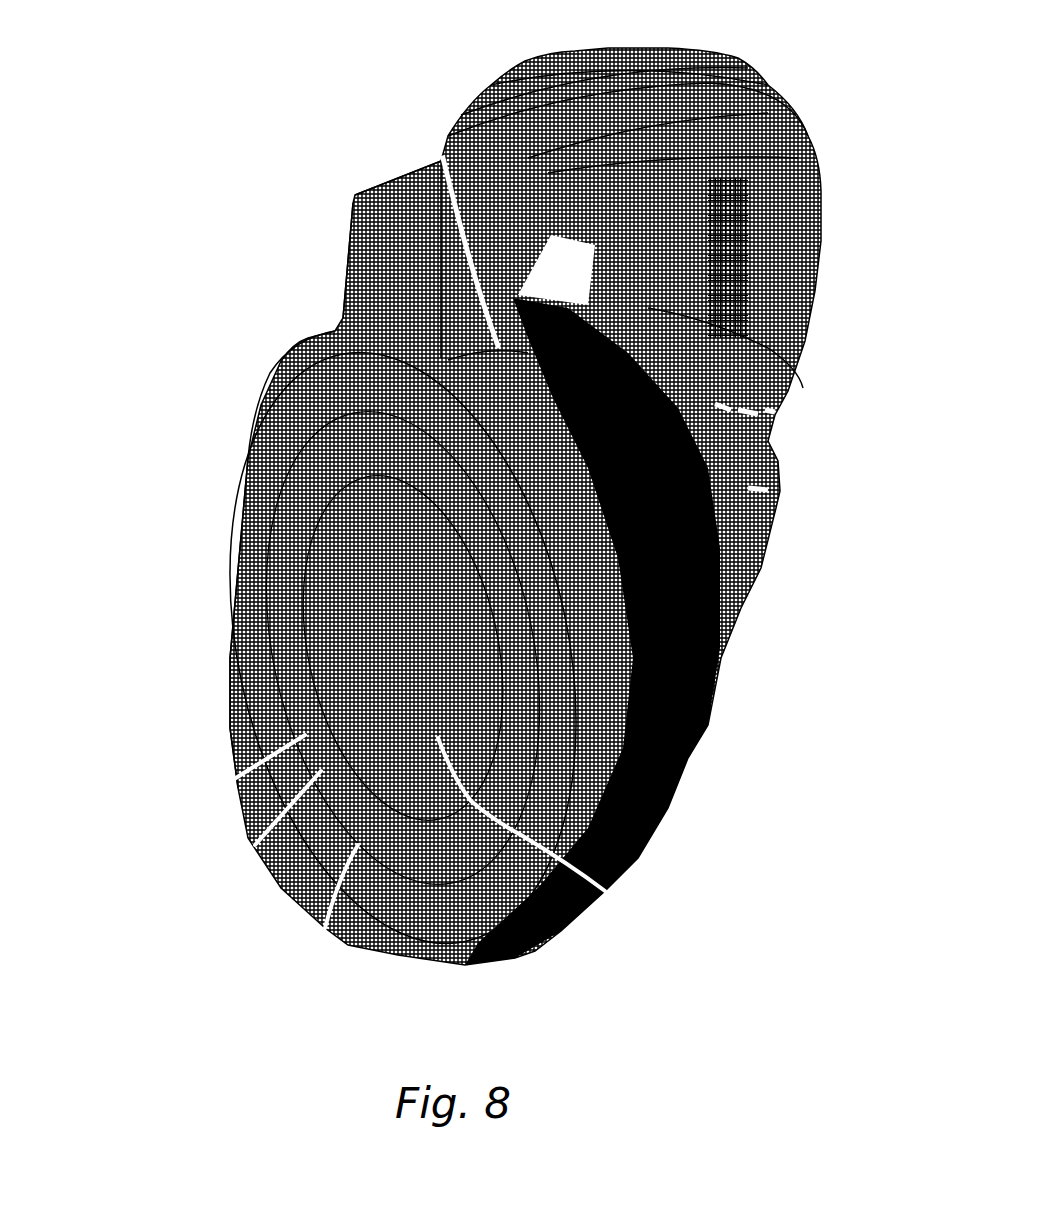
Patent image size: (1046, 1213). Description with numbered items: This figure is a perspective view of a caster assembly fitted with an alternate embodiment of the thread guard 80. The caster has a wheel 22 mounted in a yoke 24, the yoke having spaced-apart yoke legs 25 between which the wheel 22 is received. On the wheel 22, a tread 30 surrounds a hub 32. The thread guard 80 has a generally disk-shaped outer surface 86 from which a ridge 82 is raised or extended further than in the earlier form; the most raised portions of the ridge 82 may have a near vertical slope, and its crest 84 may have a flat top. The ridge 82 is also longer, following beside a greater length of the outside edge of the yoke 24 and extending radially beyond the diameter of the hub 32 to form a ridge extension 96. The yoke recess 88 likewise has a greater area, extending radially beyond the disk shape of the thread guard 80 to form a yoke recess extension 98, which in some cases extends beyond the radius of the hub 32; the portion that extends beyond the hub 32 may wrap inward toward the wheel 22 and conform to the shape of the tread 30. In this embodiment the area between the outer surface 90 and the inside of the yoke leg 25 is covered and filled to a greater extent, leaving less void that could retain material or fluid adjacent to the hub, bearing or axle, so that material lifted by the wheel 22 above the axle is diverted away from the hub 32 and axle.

The wheel 22 is at (683, 750).
The yoke 24 is at (840, 165).
The yoke leg 25 is at (342, 243).
The tread 30 is at (660, 800).
The hub 32 is at (317, 923).
The thread guard 80 is at (248, 334).
The ridge 82 is at (227, 780).
The crest 84 is at (243, 437).
The outer surface 86 is at (247, 837).
The yoke recess 88 is at (435, 148).
The outer surface 90 is at (597, 883).
The ridge extension 96 is at (772, 470).
The yoke recess extension 98 is at (773, 397).